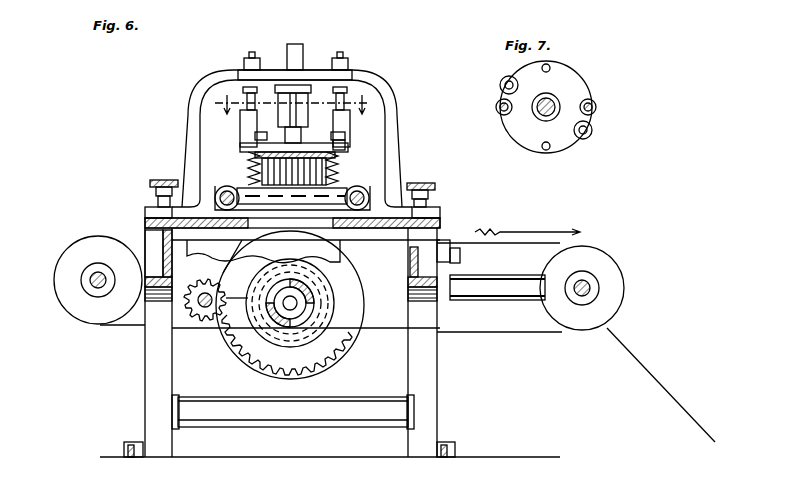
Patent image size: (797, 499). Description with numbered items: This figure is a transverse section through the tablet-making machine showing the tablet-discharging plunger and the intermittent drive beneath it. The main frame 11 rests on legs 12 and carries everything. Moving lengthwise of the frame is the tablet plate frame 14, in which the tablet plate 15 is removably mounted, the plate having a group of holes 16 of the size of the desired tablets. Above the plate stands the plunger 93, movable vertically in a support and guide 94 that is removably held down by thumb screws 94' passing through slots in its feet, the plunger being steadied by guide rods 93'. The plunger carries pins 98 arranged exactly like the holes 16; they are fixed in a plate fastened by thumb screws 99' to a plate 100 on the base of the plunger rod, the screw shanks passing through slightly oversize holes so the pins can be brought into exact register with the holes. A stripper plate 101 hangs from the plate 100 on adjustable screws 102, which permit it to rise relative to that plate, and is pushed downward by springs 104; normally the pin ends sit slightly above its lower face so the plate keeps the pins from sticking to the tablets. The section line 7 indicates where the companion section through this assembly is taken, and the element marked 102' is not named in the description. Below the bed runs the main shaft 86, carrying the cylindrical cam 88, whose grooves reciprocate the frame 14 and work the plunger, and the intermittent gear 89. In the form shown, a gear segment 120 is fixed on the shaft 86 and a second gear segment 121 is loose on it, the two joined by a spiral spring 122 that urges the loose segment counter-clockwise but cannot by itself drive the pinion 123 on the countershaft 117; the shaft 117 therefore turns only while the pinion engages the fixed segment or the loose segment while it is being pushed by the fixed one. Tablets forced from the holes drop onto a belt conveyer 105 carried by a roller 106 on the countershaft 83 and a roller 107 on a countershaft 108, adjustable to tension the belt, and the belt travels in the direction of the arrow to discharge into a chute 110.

In FIG. 6, the section line 7- 7 is at (291, 105).
In FIG. 6, the main frame 11 is at (440, 224).
In FIG. 6, the legs 12 is at (145, 418).
In FIG. 6, the tablet plate frame 14 is at (356, 187).
In FIG. 6, the tablet plate 15 is at (333, 197).
In FIG. 6, the holes 16 is at (253, 192).
In FIG. 6, the countershaft 83 is at (97, 288).
In FIG. 6, the main shaft 86 is at (297, 302).
In FIG. 6, the cylindrical cam 88 is at (258, 352).
In FIG. 6, the intermittent gear 89 is at (330, 318).
In FIG. 6, the plunger 93 is at (302, 79).
In FIG. 7, the plunger 93 is at (532, 127).
In FIG. 6, the guide rods 93' is at (302, 89).
In FIG. 7, the guide rods 93' is at (548, 111).
In FIG. 6, the support and guide 94 is at (292, 120).
In FIG. 6, the thumb screws 94' is at (287, 185).
In FIG. 6, the pins 98 is at (250, 163).
In FIG. 6, the thumb screws 99' is at (312, 137).
In FIG. 7, the thumb screws 99' is at (545, 110).
In FIG. 6, the plate 100 is at (240, 143).
In FIG. 7, the plate 100 is at (588, 90).
In FIG. 6, the stripper plate 101 is at (312, 185).
In FIG. 7, the adjustable screws 102 is at (565, 121).
In FIG. 6, the plate 102' is at (263, 218).
In FIG. 6, the springs 104 is at (250, 162).
In FIG. 6, the belt conveyer 105 is at (518, 336).
In FIG. 6, the roller 106 is at (102, 318).
In FIG. 6, the roller 107 is at (595, 320).
In FIG. 6, the countershaft 108 is at (588, 283).
In FIG. 6, the chute 110 is at (641, 366).
In FIG. 6, the countershaft 117 is at (203, 300).
In FIG. 6, the gear segment 120 is at (334, 362).
In FIG. 6, the gear segment 121 is at (240, 296).
In FIG. 6, the spiral spring 122 is at (326, 288).
In FIG. 6, the pinion 123 is at (203, 322).